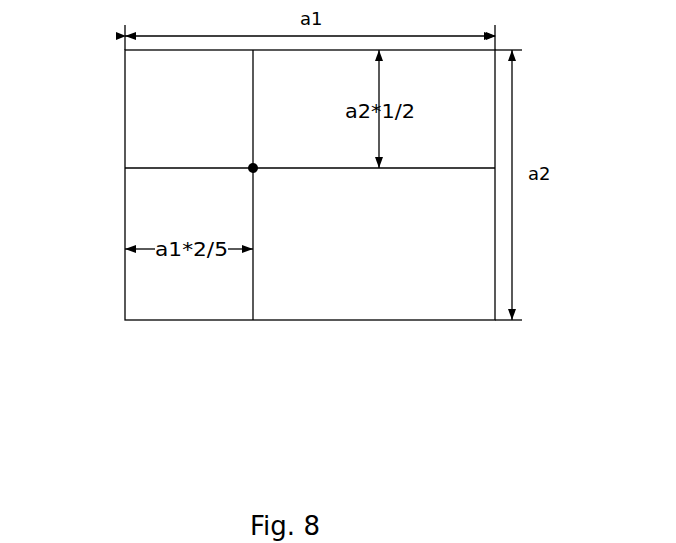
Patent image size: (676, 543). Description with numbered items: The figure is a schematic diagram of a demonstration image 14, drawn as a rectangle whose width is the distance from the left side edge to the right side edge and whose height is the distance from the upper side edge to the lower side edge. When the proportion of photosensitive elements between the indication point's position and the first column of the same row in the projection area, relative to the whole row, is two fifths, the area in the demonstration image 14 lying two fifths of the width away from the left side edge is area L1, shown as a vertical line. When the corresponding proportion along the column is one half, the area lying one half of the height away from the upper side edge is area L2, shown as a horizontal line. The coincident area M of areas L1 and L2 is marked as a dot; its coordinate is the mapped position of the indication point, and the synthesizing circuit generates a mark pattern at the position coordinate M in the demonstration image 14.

The demonstration image 14 is at (310, 320).
The area L1 is at (253, 108).
The area L2 is at (155, 168).
The coincident area M is at (253, 168).